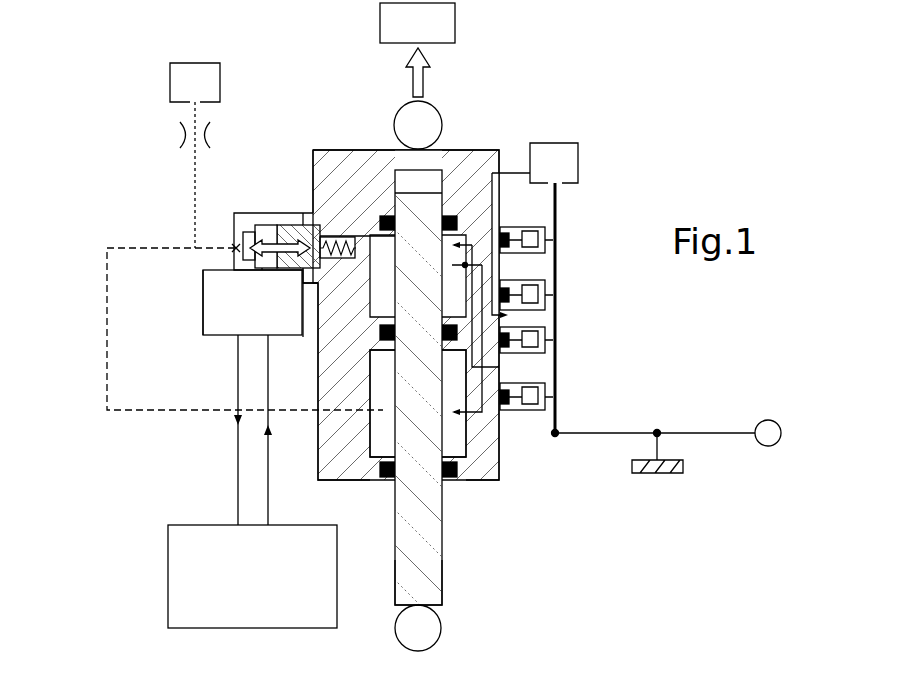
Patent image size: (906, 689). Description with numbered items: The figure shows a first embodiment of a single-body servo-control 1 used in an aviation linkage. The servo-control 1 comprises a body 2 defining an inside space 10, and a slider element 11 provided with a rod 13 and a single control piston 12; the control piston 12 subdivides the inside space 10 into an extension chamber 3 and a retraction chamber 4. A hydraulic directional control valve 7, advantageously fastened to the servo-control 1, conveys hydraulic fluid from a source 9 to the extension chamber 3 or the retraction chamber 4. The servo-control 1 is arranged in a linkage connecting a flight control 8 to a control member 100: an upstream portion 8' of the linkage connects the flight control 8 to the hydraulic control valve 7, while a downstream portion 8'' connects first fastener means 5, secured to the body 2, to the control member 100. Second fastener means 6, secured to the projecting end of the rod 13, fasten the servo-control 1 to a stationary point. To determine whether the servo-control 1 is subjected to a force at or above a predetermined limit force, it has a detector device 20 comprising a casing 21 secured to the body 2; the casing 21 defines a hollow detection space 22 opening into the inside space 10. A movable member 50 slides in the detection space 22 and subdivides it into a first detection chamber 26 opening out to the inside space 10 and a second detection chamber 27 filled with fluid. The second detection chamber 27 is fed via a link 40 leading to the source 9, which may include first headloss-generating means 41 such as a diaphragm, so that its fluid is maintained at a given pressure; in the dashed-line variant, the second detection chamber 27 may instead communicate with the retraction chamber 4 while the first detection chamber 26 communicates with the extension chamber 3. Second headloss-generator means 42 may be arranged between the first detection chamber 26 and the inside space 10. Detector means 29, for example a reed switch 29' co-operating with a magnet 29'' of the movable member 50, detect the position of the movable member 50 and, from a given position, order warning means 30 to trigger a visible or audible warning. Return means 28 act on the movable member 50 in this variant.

The servo-control 1 is at (666, 71).
The body 2 is at (498, 148).
The extension chamber 3 is at (482, 265).
The retraction chamber 4 is at (457, 442).
The first fastener means 5 is at (444, 118).
The second fastener means 6 is at (443, 640).
The hydraulic directional control valve 7 is at (532, 462).
The flight control 8 is at (677, 404).
The upstream portion of the linkage 8' is at (678, 488).
The downstream portion of the linkage 8'' is at (457, 70).
The source 9 is at (190, 63).
The inside space 10 is at (383, 442).
The slider element 11 is at (472, 590).
The control piston 12 is at (385, 345).
The rod 13 is at (440, 538).
The detector device 20 is at (118, 237).
The casing 21 is at (248, 213).
The detection space 22 is at (233, 256).
The first detection chamber 26 is at (340, 237).
The second detection chamber 27 is at (263, 225).
The return means 28 is at (348, 262).
The detector means 29 is at (230, 332).
The reed switch 29' is at (160, 303).
The magnet 29'' is at (272, 296).
The warning means 30 is at (168, 552).
The link 40 is at (143, 200).
The first headloss-generating means 41 is at (178, 135).
The second headloss-generator means 42 is at (365, 222).
The movable member 50 is at (302, 213).
The control member 100 is at (401, 36).